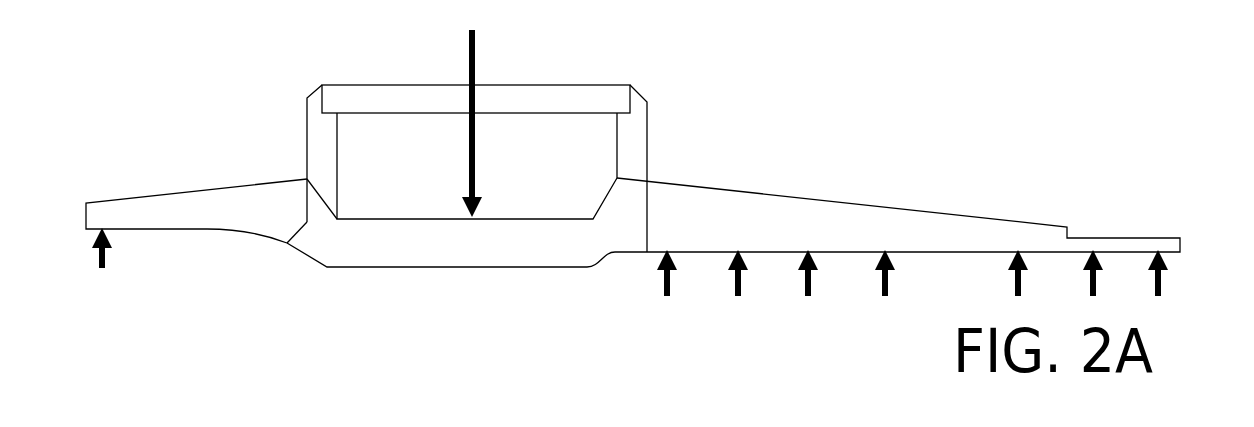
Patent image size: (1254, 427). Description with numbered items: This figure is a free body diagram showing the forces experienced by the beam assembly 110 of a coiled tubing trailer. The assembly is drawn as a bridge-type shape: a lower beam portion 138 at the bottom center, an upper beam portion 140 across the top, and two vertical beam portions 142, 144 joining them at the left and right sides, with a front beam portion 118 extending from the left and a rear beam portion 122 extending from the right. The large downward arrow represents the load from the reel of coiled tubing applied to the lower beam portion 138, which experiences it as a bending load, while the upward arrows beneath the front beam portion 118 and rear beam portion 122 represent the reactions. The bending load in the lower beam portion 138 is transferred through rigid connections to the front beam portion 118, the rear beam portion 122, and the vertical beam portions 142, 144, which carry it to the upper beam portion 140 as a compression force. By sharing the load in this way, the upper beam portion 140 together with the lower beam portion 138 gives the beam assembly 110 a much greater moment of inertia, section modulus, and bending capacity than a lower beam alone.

The beam assembly 110 is at (735, 60).
The front beam portion 118 is at (243, 185).
The rear beam portion 122 is at (802, 198).
The lower beam portion 138 is at (462, 267).
The upper beam portion 140 is at (373, 85).
The vertical beam portion 142 is at (307, 147).
The vertical beam portion 144 is at (648, 140).